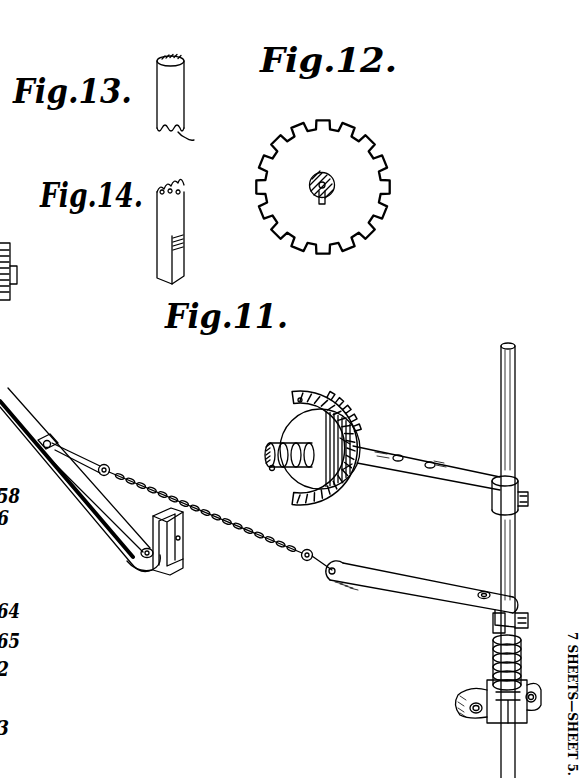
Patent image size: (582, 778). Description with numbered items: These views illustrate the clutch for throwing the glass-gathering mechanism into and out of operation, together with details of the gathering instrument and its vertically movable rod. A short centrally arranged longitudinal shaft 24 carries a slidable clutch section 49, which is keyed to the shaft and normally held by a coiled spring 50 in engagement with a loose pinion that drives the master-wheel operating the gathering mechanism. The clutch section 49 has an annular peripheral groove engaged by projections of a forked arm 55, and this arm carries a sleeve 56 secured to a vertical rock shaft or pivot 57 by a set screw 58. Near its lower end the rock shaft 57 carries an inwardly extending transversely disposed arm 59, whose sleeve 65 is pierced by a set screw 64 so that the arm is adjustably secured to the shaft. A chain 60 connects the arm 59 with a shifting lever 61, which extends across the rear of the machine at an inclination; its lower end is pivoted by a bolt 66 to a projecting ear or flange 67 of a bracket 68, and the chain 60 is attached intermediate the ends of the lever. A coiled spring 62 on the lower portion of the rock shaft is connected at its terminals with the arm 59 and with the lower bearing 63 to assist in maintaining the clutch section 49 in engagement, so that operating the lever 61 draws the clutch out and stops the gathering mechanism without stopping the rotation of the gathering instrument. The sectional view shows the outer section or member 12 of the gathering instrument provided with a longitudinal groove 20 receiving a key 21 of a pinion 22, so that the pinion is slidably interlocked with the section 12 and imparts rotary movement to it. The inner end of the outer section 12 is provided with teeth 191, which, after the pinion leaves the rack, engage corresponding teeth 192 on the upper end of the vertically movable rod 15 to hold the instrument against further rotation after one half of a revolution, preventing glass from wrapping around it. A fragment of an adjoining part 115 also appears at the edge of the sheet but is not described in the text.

In FIG. 13, the outer section or member of the gathering instrument 12 is at (184, 96).
In FIG. 12, the outer section or member of the gathering instrument 12 is at (322, 173).
In FIG. 13, the teeth 191 is at (204, 143).
In FIG. 14, the vertically disposed rod 15 is at (157, 259).
In FIG. 14, the teeth 192 is at (186, 197).
In FIG. 12, the pinion 22 is at (376, 176).
In FIG. 12, the longitudinal groove 20 is at (326, 188).
In FIG. 12, the key 21 is at (323, 204).
In FIG. 11, the housing fragment 115 is at (23, 269).
In FIG. 11, the shifting lever 61 is at (79, 482).
In FIG. 11, the projecting ear or flange 67 is at (131, 567).
In FIG. 11, the bolt 66 is at (148, 562).
In FIG. 11, the bracket 68 is at (182, 558).
In FIG. 11, the chain 60 is at (238, 526).
In FIG. 11, the slidable clutch section 49 is at (298, 420).
In FIG. 11, the short longitudinal shaft 24 is at (266, 455).
In FIG. 11, the coiled spring 50 is at (271, 471).
In FIG. 11, the forked arm 55 is at (398, 455).
In FIG. 11, the vertical rock shaft or pivot 57 is at (520, 405).
In FIG. 11, the sleeve 56 is at (519, 483).
In FIG. 11, the set screw 58 is at (529, 502).
In FIG. 11, the arm 59 is at (395, 566).
In FIG. 11, the sleeve 65 is at (494, 624).
In FIG. 11, the set screw 64 is at (538, 610).
In FIG. 11, the coiled spring 62 is at (531, 652).
In FIG. 11, the lower bearing 63 is at (503, 716).